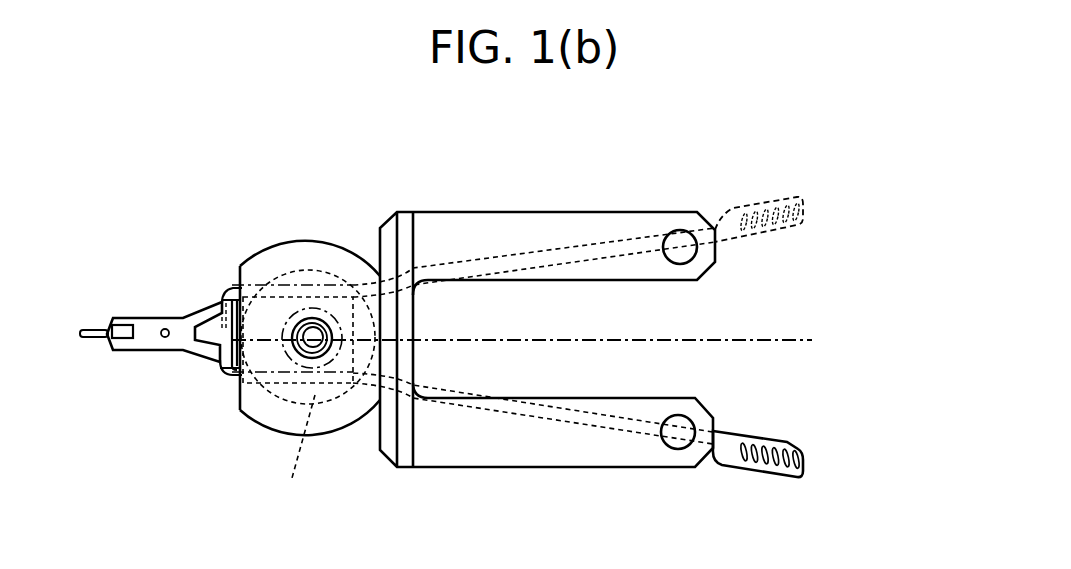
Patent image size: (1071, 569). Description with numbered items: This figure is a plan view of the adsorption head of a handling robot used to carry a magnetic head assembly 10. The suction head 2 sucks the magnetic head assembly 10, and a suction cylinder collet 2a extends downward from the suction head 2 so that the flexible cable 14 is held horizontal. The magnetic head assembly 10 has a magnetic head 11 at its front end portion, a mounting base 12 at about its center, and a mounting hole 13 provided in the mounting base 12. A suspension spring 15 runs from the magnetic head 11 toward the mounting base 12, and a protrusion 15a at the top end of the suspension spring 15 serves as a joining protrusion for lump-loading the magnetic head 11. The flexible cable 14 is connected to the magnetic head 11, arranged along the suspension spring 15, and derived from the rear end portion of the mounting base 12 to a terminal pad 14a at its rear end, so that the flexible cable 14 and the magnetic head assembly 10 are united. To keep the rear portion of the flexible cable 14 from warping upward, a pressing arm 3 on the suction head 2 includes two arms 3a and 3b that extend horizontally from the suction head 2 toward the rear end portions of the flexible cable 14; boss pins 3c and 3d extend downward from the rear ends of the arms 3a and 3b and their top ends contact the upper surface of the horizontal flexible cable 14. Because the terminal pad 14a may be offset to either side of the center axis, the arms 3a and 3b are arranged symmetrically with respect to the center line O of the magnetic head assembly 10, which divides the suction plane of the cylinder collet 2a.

The suction head 2 is at (320, 245).
The suction cylinder collet 2a is at (301, 452).
The pressing arm 3 is at (523, 324).
The arm 3a is at (665, 400).
The arm 3b is at (640, 213).
The boss pin 3c is at (678, 448).
The boss pin 3d is at (680, 232).
The magnetic head assembly 10 is at (218, 381).
The magnetic head 11 is at (124, 325).
The mounting base 12 is at (278, 308).
The mounting hole 13 is at (325, 336).
The flexible cable 14 is at (537, 418).
The terminal pad 14a is at (781, 442).
The suspension spring 15 is at (222, 300).
The protrusion 15a is at (94, 340).
The center line O is at (534, 342).